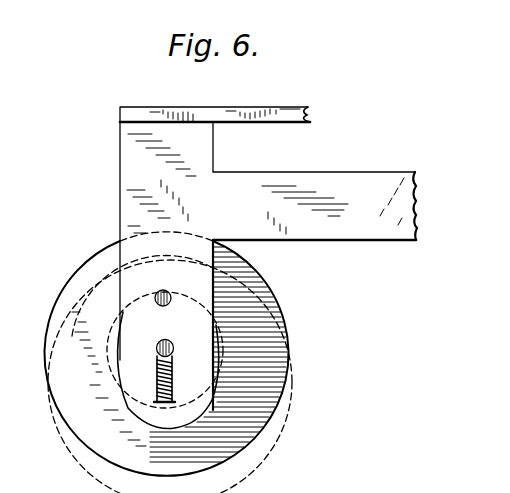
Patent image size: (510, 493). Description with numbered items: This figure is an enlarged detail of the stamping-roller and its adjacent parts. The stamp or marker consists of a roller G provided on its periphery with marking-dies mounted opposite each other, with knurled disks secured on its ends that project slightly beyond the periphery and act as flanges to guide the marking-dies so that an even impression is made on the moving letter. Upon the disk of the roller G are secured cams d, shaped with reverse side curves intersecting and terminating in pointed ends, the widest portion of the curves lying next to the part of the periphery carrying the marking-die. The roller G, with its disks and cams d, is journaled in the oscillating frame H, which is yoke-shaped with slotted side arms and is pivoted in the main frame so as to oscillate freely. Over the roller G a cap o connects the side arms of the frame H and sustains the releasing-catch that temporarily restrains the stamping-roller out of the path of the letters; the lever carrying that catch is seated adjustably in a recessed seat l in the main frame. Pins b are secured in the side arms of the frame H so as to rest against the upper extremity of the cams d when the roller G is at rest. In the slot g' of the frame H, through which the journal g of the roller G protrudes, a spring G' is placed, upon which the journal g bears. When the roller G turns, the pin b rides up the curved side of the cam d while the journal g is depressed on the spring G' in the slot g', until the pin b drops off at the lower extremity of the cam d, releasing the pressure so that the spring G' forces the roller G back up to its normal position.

The oscillating frame H is at (268, 258).
The cap o is at (197, 117).
The stamping-roller G is at (168, 362).
The recessed seat l is at (92, 291).
The cams d is at (114, 344).
The slot g' is at (165, 350).
The pins b is at (172, 297).
The journal g is at (177, 350).
The spring G' is at (179, 379).